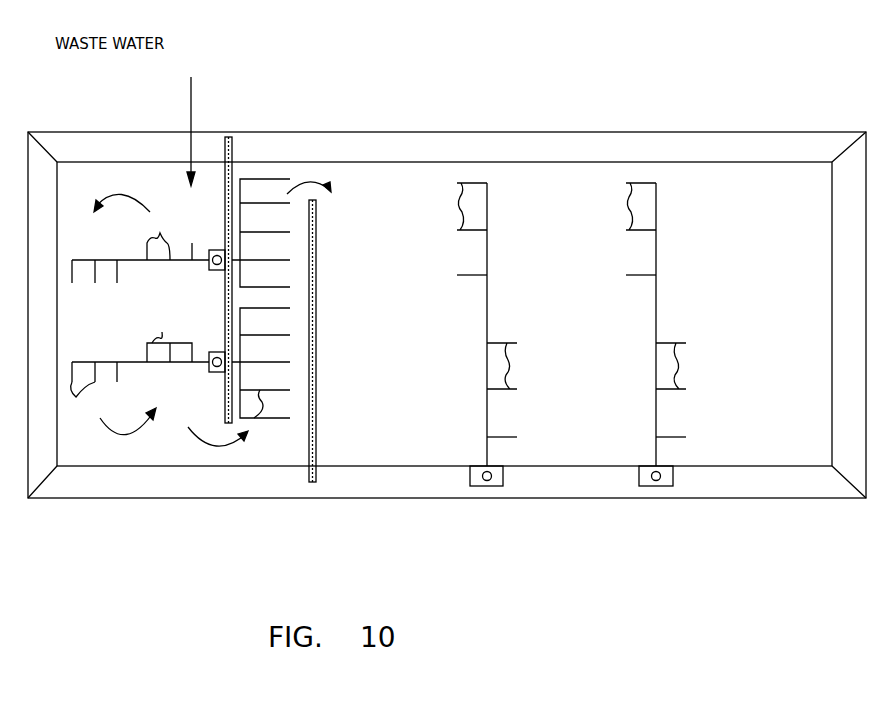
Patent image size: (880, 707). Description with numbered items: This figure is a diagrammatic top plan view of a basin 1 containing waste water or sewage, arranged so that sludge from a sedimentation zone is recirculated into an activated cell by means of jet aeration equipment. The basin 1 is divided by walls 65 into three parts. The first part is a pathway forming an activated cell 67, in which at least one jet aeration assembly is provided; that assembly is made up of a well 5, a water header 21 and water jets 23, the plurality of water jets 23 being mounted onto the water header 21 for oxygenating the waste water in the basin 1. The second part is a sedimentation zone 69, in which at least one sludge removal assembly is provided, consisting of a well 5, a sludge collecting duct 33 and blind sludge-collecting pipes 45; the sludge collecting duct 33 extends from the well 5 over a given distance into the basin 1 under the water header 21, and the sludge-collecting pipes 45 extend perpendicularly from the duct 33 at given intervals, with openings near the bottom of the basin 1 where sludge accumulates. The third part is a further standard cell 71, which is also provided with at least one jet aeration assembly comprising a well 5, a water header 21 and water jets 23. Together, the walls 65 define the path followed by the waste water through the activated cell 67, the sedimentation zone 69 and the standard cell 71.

The basin 1 is at (500, 133).
The well 5 is at (214, 250).
The water header 21 is at (136, 262).
The water jet 23 is at (156, 240).
The sludge collecting duct 33 is at (240, 247).
The sludge-collecting pipe 45 is at (262, 204).
The wall 65 is at (225, 192).
The activated cell 67 is at (115, 332).
The sedimentation zone 69 is at (274, 306).
The standard cell 71 is at (613, 337).